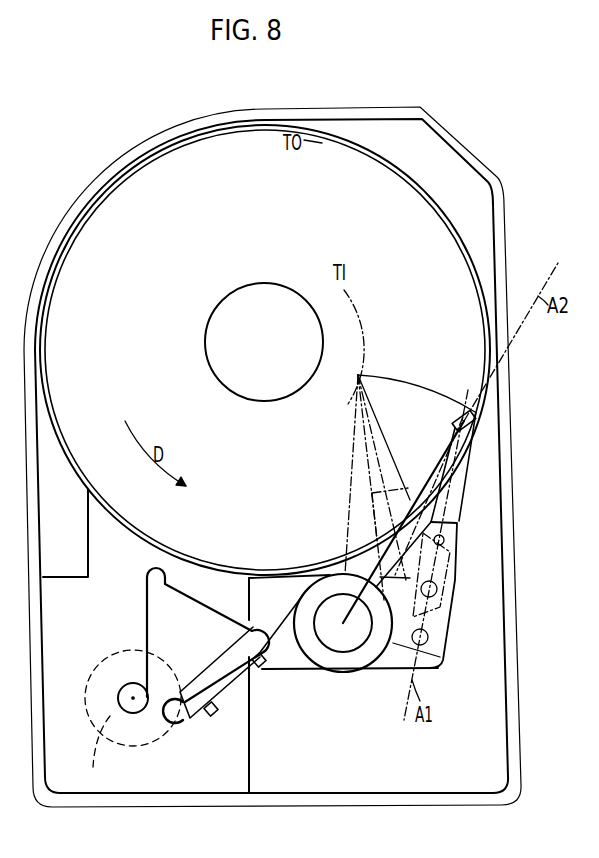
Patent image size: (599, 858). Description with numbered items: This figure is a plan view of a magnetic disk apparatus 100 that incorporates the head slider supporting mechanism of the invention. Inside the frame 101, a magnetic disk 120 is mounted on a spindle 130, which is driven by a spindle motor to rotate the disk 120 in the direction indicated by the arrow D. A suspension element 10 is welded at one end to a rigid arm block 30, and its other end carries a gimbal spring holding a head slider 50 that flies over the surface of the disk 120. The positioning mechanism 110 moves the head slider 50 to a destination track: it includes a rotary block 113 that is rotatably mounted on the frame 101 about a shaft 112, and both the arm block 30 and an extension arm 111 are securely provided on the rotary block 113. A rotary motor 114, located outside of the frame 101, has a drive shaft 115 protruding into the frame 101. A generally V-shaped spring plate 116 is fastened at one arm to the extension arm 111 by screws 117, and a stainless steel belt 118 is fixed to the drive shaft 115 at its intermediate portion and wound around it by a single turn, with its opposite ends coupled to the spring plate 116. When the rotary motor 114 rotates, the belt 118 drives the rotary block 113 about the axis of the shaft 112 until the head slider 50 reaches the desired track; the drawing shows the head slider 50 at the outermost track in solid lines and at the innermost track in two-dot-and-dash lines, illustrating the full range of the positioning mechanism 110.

The magnetic disk apparatus 100 is at (463, 136).
The frame 101 is at (492, 801).
The magnetic disk 120 is at (146, 292).
The spindle 130 is at (216, 349).
The suspension element 10 is at (464, 486).
The arm block 30 is at (447, 580).
The head slider 50 is at (477, 423).
The positioning mechanism 110 is at (323, 680).
The extension arm 111 is at (290, 655).
The shaft 112 is at (318, 611).
The rotary block 113 is at (368, 657).
The rotary motor 114 is at (93, 770).
The drive shaft 115 is at (125, 689).
The spring plate 116 is at (190, 716).
The screws 117 is at (220, 700).
The belt 118 is at (145, 604).